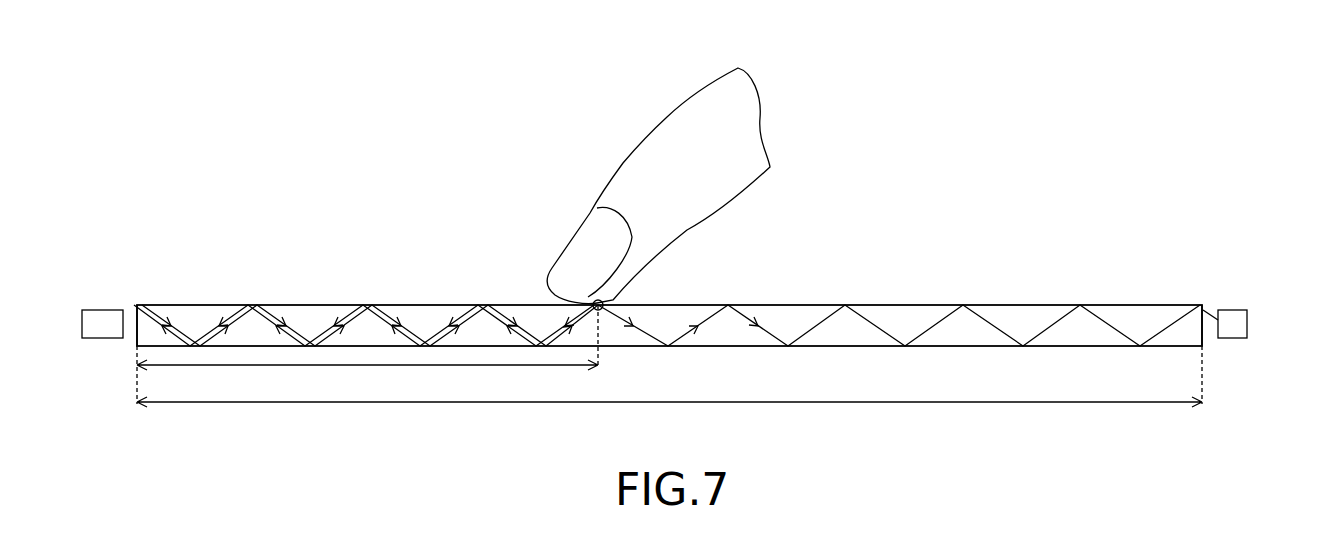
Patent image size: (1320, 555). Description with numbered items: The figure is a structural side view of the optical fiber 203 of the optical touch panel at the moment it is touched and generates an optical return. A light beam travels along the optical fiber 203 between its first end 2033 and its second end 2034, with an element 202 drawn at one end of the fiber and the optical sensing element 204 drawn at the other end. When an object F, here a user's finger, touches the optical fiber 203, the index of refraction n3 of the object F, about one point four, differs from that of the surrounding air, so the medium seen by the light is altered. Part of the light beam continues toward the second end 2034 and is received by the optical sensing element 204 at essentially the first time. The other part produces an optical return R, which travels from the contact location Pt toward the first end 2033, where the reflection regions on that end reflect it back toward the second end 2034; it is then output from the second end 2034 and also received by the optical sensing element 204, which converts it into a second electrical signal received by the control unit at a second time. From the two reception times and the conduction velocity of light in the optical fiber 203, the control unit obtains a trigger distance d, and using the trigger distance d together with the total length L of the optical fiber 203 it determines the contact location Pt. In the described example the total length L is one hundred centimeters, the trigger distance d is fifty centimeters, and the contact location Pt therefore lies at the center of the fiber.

The first transducer 202 is at (105, 320).
The optical fiber 203 is at (894, 314).
The optical sensing element 204 is at (1230, 322).
The first end 2033 is at (1195, 335).
The second end 2034 is at (138, 337).
The object F is at (625, 187).
The index of refraction of the medium of the object n3 is at (687, 167).
The contact location Pt is at (597, 300).
The optical return R is at (557, 330).
The trigger distance d is at (367, 354).
The total length L is at (669, 389).